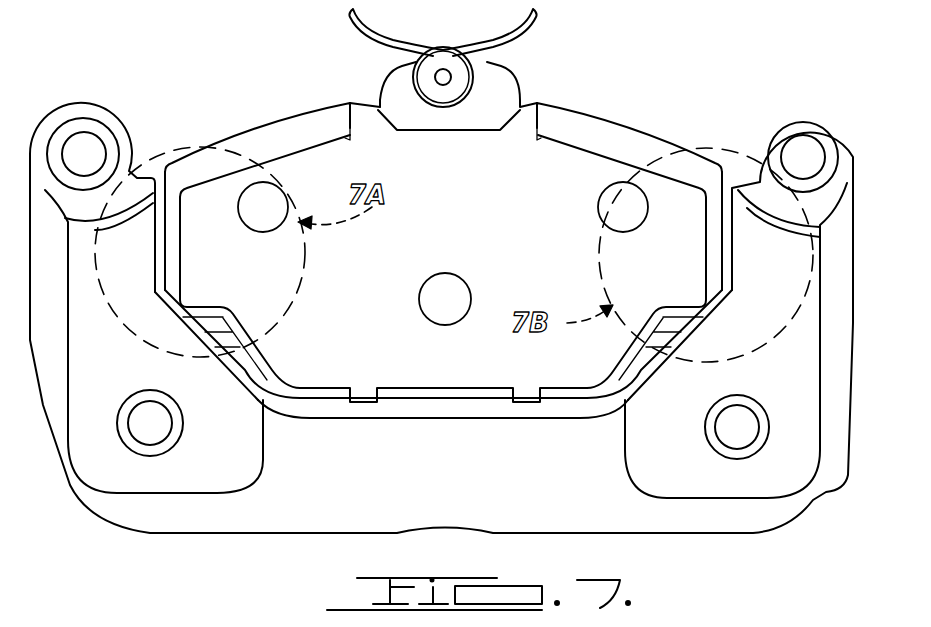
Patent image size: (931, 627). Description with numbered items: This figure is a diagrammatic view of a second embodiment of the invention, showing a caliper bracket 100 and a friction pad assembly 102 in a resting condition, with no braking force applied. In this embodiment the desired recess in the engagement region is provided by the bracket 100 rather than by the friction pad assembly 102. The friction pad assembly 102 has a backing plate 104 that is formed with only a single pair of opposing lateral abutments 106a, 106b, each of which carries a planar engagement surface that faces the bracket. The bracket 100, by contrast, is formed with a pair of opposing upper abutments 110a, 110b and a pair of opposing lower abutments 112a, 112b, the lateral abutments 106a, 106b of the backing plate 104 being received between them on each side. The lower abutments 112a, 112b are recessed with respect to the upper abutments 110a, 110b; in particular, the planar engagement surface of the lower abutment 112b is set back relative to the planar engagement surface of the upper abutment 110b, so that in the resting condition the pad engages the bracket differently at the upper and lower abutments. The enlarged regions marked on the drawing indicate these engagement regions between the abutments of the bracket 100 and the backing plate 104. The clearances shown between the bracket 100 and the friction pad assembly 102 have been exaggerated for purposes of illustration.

The bracket 100 is at (845, 124).
The friction pad assembly 102 is at (584, 114).
The backing plate 104 is at (622, 137).
The lateral abutment 106a is at (181, 251).
The lateral abutment 106b is at (717, 258).
The upper abutment 110a is at (150, 212).
The upper abutment 110b is at (737, 217).
The lower abutment 112a is at (110, 310).
The lower abutment 112b is at (740, 273).